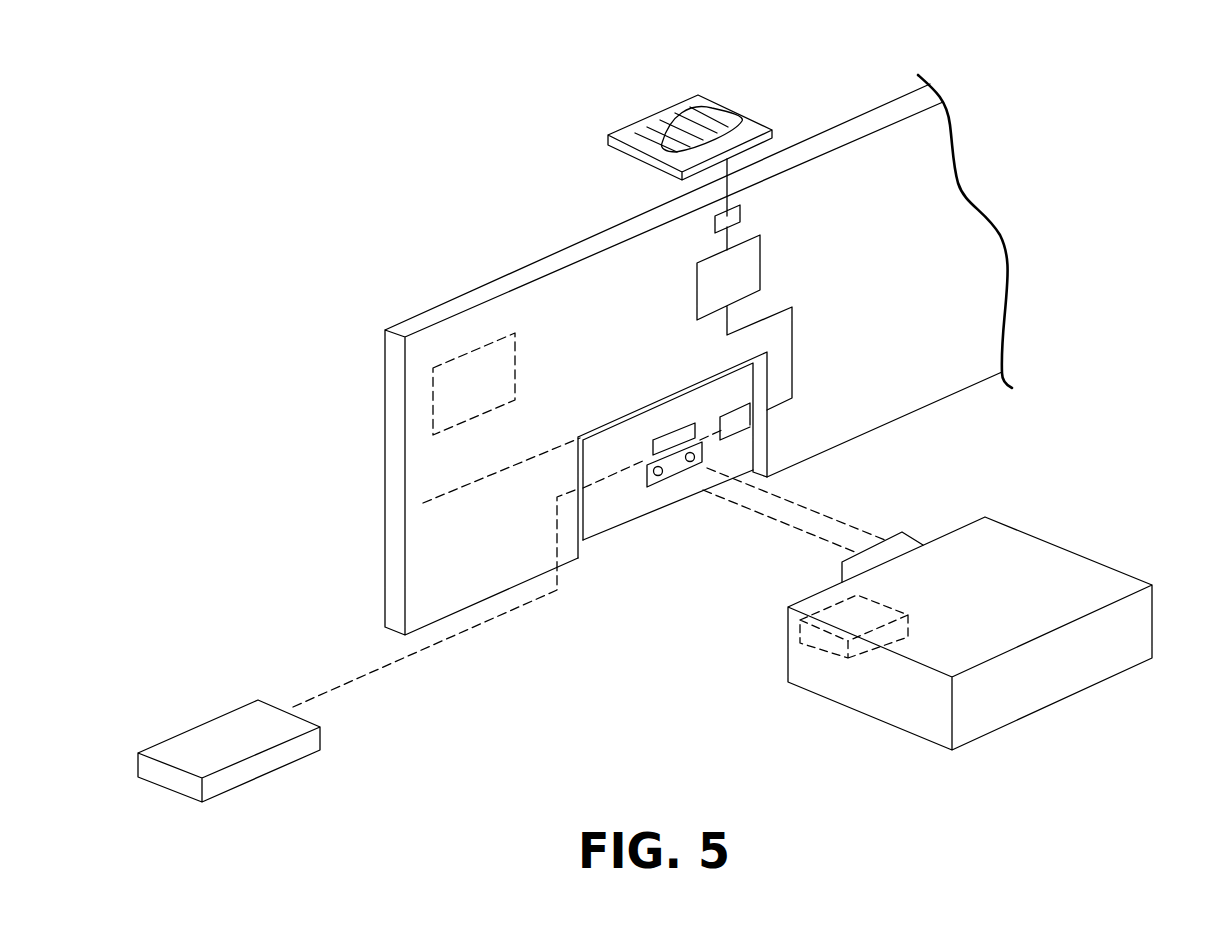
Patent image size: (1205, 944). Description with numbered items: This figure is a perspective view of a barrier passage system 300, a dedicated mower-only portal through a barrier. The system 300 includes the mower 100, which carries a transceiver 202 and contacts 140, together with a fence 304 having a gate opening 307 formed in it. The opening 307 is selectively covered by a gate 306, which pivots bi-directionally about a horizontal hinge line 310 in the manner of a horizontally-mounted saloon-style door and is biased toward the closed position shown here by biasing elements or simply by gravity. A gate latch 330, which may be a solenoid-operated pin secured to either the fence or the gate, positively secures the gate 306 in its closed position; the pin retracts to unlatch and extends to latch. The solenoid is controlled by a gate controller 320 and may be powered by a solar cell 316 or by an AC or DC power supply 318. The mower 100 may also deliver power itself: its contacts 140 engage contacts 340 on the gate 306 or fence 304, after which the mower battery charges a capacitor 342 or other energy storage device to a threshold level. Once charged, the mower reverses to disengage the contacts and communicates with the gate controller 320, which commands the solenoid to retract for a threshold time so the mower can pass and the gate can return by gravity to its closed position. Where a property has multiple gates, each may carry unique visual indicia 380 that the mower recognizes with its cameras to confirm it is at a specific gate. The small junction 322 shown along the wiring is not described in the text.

The mower 100 is at (1077, 548).
The contacts 140 is at (904, 540).
The transceiver 202 is at (878, 630).
The barrier passage system 300 is at (1060, 122).
The fence 304 is at (490, 281).
The gate 306 is at (620, 512).
The gate opening 307 is at (583, 548).
The horizontal hinge line 310 is at (447, 492).
The solar cell 316 is at (710, 95).
The power supply 318 is at (192, 729).
The gate controller 320 is at (697, 280).
The junction 322 is at (742, 207).
The gate latch 330 is at (737, 417).
The contacts 340 is at (688, 462).
The capacitor 342 is at (668, 432).
The indicia 380 is at (433, 385).